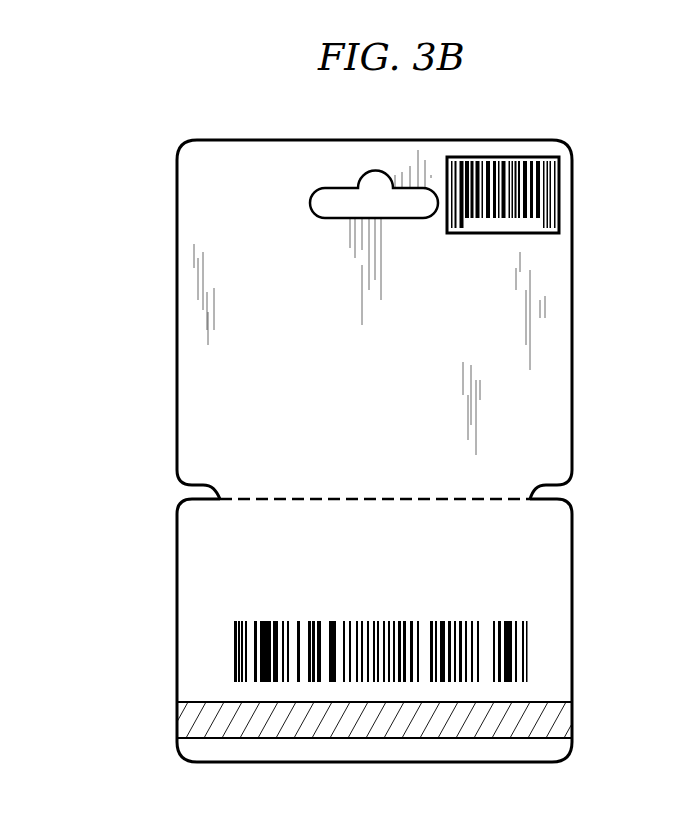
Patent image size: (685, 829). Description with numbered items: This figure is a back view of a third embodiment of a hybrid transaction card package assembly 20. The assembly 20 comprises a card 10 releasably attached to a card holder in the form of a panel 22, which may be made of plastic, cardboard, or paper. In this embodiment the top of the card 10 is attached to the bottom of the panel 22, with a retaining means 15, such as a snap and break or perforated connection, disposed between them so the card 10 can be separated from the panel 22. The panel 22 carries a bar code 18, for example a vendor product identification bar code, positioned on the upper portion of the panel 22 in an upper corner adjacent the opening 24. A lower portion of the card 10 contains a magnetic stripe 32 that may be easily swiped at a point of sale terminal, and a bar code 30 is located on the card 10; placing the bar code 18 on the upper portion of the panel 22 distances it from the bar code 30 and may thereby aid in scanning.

The card 10 is at (177, 596).
The retaining means 15 is at (237, 502).
The bar code 18 is at (522, 157).
The hybrid transaction card package assembly 20 is at (261, 104).
The panel 22 is at (566, 338).
The opening 24 is at (370, 192).
The bar code 30 is at (528, 642).
The magnetic stripe 32 is at (573, 715).